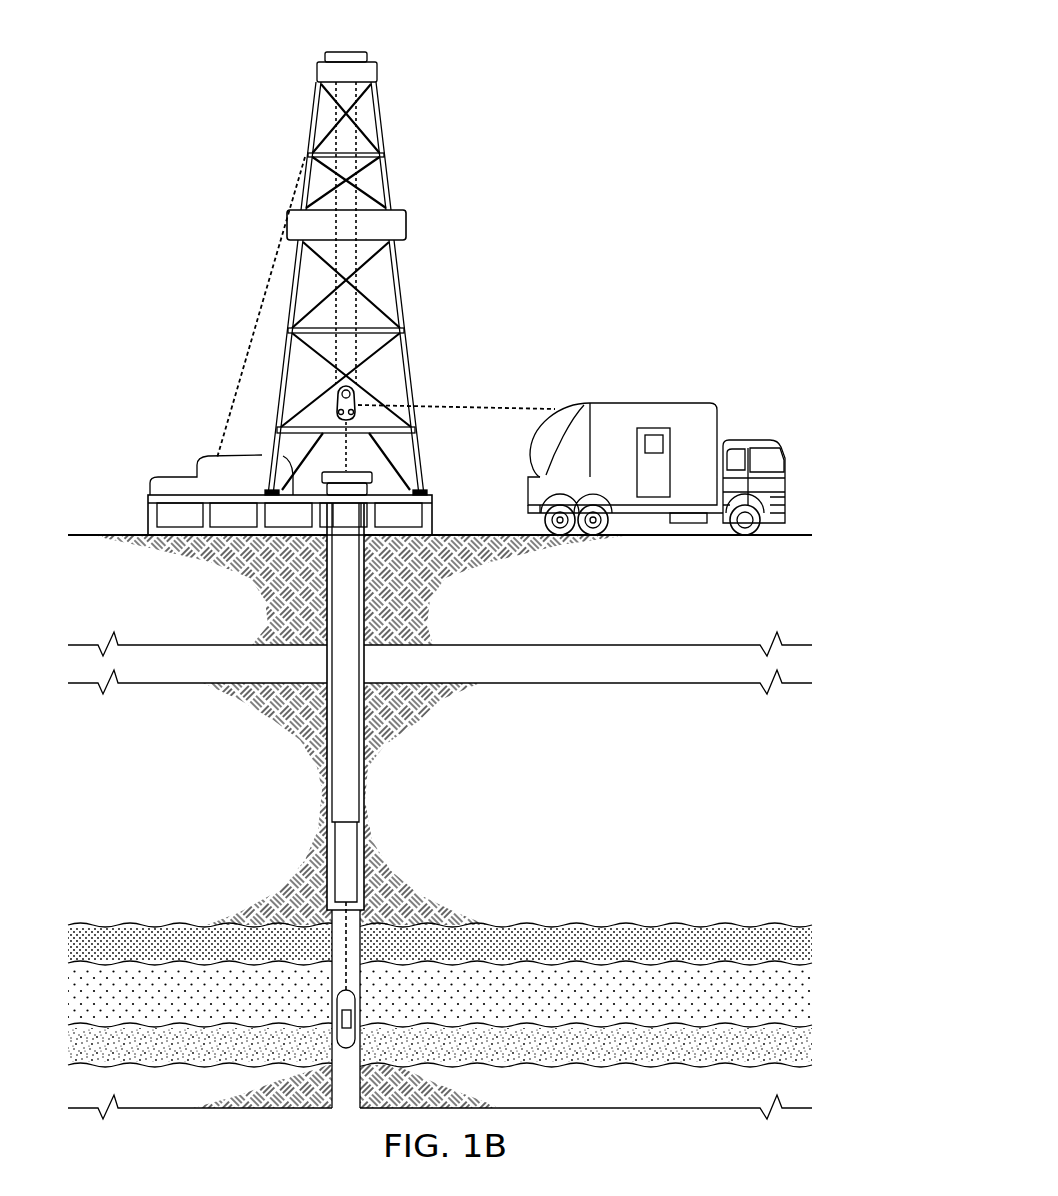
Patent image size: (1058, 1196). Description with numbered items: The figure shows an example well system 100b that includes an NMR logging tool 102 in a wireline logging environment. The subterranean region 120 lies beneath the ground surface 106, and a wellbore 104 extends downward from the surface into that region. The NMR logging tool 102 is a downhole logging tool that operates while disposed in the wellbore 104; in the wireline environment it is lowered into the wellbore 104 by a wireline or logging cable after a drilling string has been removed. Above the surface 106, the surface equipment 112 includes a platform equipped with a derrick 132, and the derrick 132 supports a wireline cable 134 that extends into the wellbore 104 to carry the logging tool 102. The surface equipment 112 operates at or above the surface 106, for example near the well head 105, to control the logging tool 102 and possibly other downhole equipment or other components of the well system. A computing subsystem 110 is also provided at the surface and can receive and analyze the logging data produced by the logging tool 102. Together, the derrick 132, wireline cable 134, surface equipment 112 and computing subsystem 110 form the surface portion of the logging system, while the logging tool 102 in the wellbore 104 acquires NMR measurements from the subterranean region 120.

The well system 100b is at (207, 89).
The logging tool 102 is at (337, 1010).
The wellbore 104 is at (327, 810).
The well head 105 is at (367, 471).
The ground surface 106 is at (474, 534).
The computing subsystem 110 is at (653, 432).
The surface equipment 112 is at (536, 288).
The subterranean region 120 is at (536, 790).
The derrick 132 is at (389, 186).
The wireline cable 134 is at (343, 460).